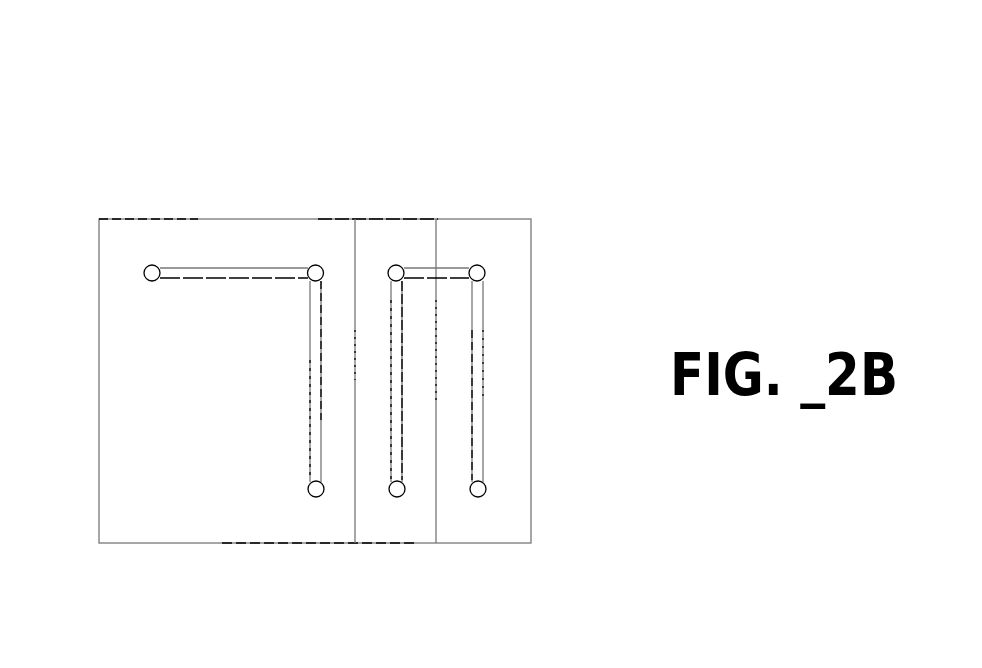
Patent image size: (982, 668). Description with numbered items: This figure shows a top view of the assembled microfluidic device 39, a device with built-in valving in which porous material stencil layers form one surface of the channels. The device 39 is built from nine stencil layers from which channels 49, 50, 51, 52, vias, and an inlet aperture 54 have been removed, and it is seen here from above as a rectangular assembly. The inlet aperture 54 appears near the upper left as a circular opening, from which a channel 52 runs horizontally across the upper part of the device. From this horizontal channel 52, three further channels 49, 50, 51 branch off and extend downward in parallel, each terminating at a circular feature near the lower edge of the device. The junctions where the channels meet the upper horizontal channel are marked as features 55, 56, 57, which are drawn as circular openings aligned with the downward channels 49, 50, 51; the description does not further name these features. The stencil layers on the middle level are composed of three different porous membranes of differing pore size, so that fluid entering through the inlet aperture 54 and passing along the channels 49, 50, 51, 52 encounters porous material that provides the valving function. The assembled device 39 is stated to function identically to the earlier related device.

The microfluidic device 39 is at (68, 85).
The channel 52 is at (236, 265).
The inlet aperture 54 is at (146, 268).
The contact pad 55 is at (311, 266).
The contact pad 56 is at (398, 266).
The contact pad 57 is at (484, 267).
The channel 49 is at (321, 472).
The channel 50 is at (402, 472).
The channel 51 is at (485, 471).